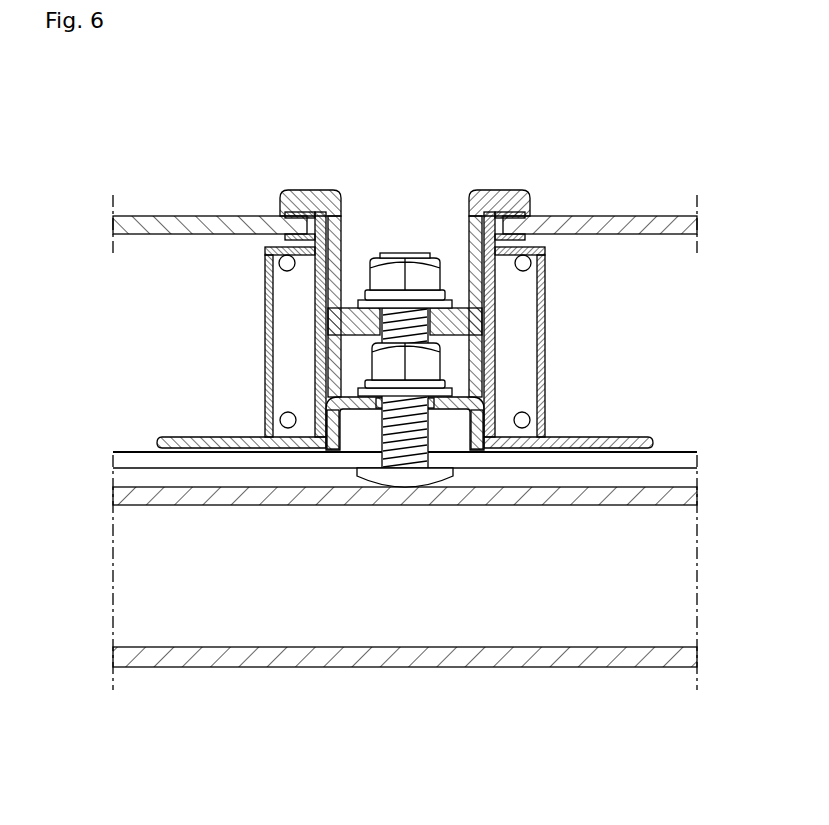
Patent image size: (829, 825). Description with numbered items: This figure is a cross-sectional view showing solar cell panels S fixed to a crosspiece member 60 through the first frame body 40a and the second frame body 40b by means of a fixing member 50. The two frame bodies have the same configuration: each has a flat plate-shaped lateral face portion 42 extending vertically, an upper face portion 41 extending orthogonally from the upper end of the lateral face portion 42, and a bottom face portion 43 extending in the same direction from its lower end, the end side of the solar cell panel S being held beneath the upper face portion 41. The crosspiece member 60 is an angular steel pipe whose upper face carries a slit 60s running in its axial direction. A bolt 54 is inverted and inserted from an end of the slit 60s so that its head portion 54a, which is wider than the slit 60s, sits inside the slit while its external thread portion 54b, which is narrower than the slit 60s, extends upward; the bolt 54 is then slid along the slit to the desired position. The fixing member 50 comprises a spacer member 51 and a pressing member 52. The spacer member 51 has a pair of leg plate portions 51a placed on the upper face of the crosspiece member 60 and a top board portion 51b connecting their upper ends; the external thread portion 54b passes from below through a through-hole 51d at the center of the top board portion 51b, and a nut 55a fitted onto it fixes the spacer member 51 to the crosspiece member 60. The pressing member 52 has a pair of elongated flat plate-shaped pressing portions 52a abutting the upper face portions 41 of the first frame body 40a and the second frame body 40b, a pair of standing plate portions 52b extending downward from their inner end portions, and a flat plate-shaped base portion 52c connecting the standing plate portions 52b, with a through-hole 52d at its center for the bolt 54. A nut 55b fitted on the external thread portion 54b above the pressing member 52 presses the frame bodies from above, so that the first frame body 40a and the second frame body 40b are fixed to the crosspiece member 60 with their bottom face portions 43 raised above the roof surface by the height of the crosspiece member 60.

The first frame body 40a is at (221, 292).
The second frame body 40b is at (577, 292).
The upper face portion 41 is at (282, 207).
The lateral face portion 42 is at (318, 288).
The bottom face portion 43 is at (175, 437).
The fixing member 50 is at (453, 114).
The spacer member 51 is at (413, 450).
The leg plate portions 51a is at (333, 424).
The top board portion 51b is at (468, 406).
The through-hole 51d is at (383, 414).
The pressing member 52 is at (310, 177).
The pressing portions 52a is at (548, 135).
The standing plate portions 52b is at (473, 233).
The base portion 52c is at (455, 342).
The through-hole 52d is at (325, 338).
The bolt 54 is at (407, 464).
The head portion 54a is at (432, 482).
The external thread portion 54b is at (385, 440).
The nut 55a is at (378, 364).
The nut 55b is at (386, 272).
The crosspiece member 60 is at (440, 668).
The slit 60s is at (658, 473).
The solar cell panel S is at (158, 216).